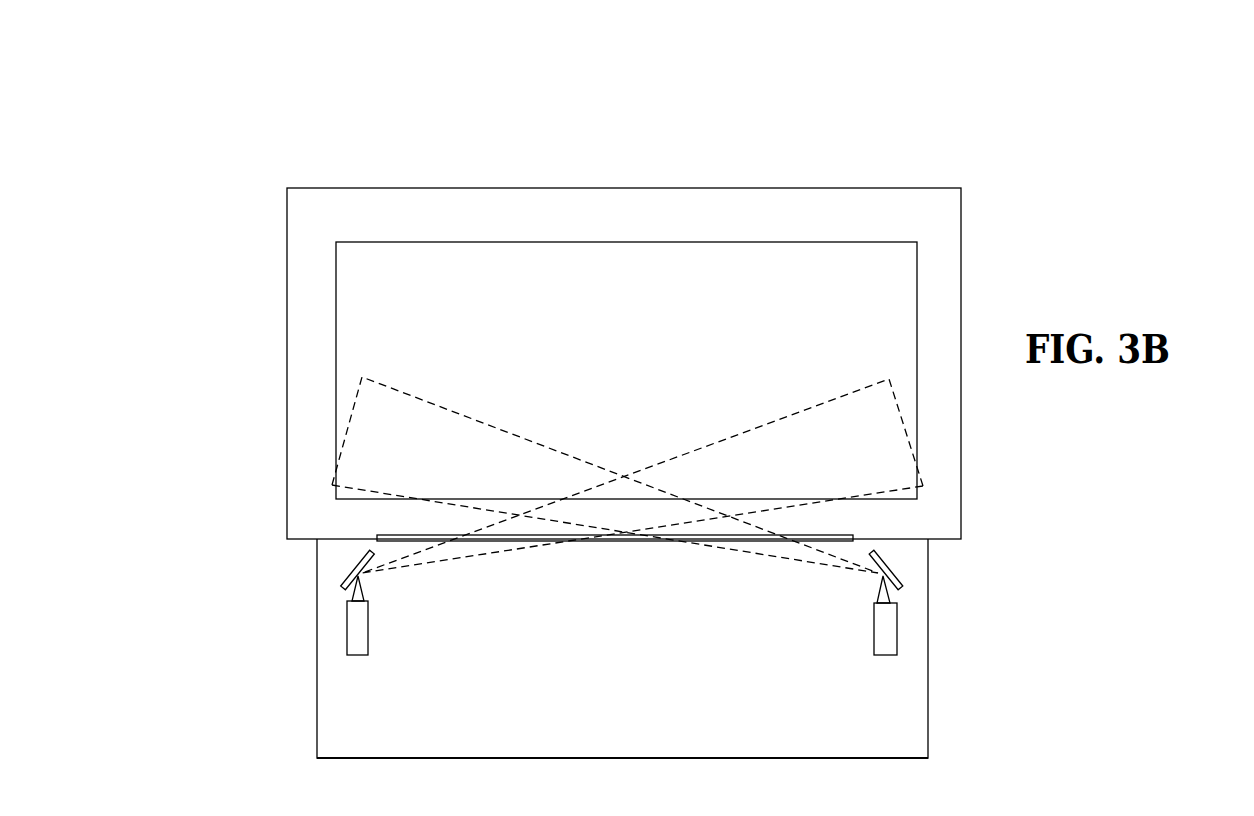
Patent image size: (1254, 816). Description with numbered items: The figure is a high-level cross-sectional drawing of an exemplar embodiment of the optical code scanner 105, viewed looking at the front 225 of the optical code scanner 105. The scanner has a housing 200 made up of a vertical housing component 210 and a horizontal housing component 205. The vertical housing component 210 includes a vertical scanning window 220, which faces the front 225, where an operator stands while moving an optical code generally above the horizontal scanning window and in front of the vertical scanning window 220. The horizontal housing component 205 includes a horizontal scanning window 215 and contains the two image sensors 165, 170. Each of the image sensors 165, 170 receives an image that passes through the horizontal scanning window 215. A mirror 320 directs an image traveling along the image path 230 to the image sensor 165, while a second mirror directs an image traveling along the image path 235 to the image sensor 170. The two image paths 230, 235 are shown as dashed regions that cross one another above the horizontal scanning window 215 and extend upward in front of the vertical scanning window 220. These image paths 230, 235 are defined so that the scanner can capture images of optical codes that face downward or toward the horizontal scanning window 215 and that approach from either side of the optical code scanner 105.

The optical code scanner 105 is at (268, 106).
The vertical housing component 210 is at (805, 188).
The vertical scanning window 220 is at (567, 268).
The image path 235 is at (430, 403).
The image path 230 is at (828, 400).
The horizontal scanning window 215 is at (840, 538).
The housing 200 is at (317, 645).
The horizontal housing component 205 is at (883, 705).
The front 225 is at (613, 725).
The mirror 320 is at (353, 568).
The image sensor 165 is at (368, 625).
The image sensor 170 is at (874, 630).